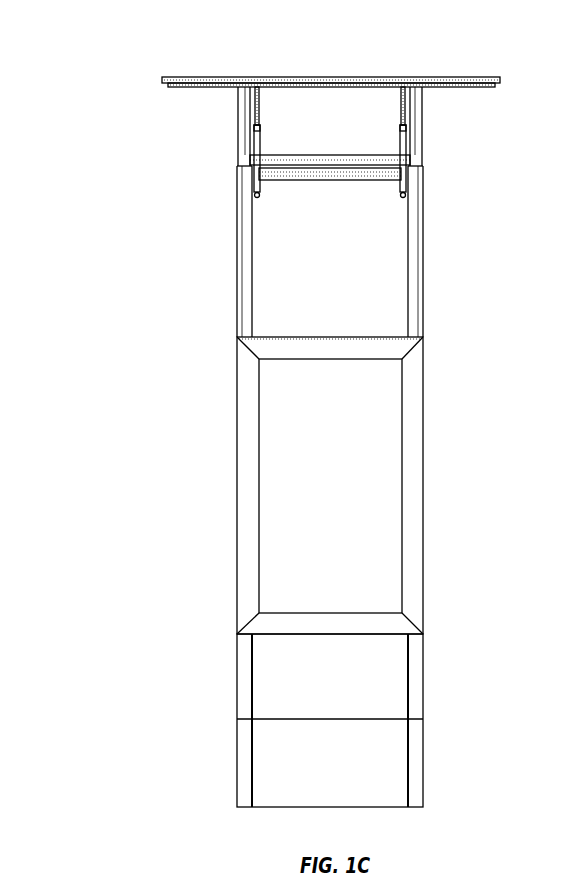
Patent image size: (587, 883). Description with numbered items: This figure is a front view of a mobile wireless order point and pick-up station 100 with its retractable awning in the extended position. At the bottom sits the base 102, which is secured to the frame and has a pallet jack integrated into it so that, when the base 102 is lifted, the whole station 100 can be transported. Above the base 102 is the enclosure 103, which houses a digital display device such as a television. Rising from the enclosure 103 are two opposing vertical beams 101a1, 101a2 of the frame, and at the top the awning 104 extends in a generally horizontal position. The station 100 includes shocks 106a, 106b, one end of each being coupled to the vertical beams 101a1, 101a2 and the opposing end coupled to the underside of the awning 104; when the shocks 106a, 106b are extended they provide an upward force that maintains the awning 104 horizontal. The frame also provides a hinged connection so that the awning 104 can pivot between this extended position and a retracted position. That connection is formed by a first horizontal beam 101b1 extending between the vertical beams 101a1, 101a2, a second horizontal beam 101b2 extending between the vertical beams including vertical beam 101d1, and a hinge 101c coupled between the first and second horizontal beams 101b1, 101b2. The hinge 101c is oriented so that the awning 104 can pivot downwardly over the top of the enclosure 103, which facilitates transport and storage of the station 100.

The station 100 is at (78, 57).
The awning 104 is at (218, 76).
The second horizontal beam 101b2 is at (262, 103).
The vertical beam 101d1 is at (423, 106).
The hinge 101c is at (350, 164).
The first horizontal beam 101b1 is at (370, 180).
The shock 106b is at (253, 136).
The shock 106a is at (406, 130).
The vertical beam 101a2 is at (237, 284).
The vertical beam 101a1 is at (423, 285).
The enclosure 103 is at (423, 502).
The base 102 is at (423, 667).